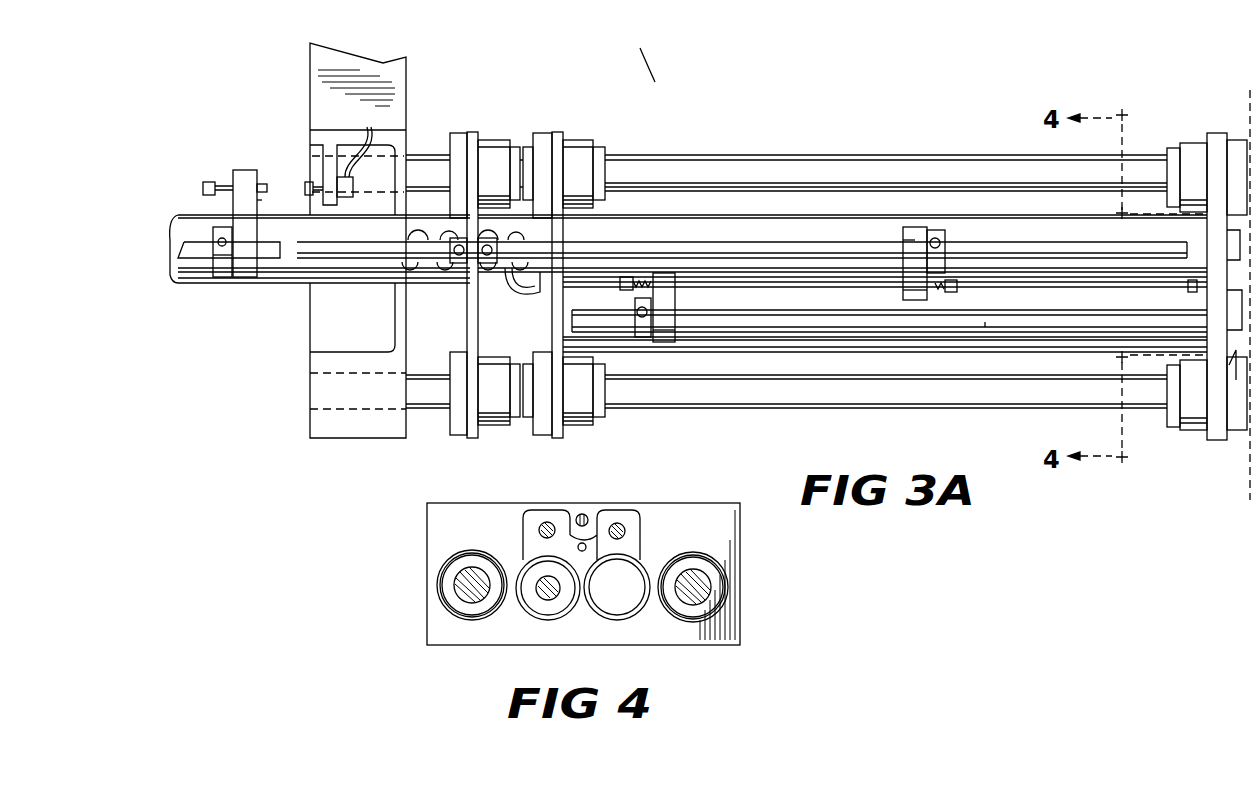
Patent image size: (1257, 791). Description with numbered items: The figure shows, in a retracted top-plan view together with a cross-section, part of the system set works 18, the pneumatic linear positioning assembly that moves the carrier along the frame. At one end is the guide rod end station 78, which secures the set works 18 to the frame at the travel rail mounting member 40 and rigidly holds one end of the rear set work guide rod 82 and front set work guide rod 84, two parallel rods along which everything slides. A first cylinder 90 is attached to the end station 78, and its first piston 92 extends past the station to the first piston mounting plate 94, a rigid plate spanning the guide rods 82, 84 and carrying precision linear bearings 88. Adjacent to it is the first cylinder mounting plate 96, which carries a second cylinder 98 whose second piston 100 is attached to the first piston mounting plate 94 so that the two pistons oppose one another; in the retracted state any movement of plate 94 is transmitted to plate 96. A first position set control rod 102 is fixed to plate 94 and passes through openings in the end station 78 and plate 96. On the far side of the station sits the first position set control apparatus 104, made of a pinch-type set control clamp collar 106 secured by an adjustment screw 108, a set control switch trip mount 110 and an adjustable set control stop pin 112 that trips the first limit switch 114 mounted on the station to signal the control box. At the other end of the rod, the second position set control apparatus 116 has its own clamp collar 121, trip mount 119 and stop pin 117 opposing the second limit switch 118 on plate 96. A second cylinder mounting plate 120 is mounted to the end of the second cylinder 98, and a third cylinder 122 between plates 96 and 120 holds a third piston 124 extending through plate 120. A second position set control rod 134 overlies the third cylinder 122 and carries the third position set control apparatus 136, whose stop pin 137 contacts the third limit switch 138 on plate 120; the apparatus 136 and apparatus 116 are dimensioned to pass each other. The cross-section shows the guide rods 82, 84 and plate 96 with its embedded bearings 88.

In FIG. 3A, the system set works 18 is at (636, 56).
In FIG. 3A, the travel rail mounting member 40 is at (322, 80).
In FIG. 3A, the guide rod end station 78 is at (350, 440).
In FIG. 3A, the rear set work guide rod 82 is at (800, 162).
In FIG. 4, the rear set work guide rod 82 is at (706, 598).
In FIG. 3A, the front set work guide rod 84 is at (868, 394).
In FIG. 4, the front set work guide rod 84 is at (460, 580).
In FIG. 3A, the bearings 88 is at (492, 140).
In FIG. 4, the bearings 88 is at (452, 595).
In FIG. 3A, the first cylinder 90 is at (296, 240).
In FIG. 3A, the first piston 92 is at (430, 236).
In FIG. 3A, the first piston mounting plate 94 is at (472, 440).
In FIG. 3A, the first cylinder mounting plate 96 is at (557, 440).
In FIG. 4, the first cylinder mounting plate 96 is at (713, 533).
In FIG. 3A, the second cylinder 98 is at (781, 240).
In FIG. 4, the second cylinder 98 is at (627, 622).
In FIG. 3A, the second piston 100 is at (524, 240).
In FIG. 3A, the first position set control rod 102 is at (191, 242).
In FIG. 4, the first position set control rod 102 is at (617, 523).
In FIG. 3A, the first position set control apparatus 104 is at (262, 200).
In FIG. 3A, the set control clamp collar 106 is at (215, 280).
In FIG. 3A, the set control clamp collar adjustment screw 108 is at (226, 280).
In FIG. 3A, the set control switch trip mount 110 is at (248, 170).
In FIG. 3A, the set control stop pin 112 is at (210, 180).
In FIG. 3A, the first limit switch 114 is at (344, 177).
In FIG. 3A, the second position set control apparatus 116 is at (915, 236).
In FIG. 4, the second position set control apparatus 116 is at (642, 542).
In FIG. 3A, the set control stop pin 117 is at (950, 294).
In FIG. 4, the set control stop pin 117 is at (583, 514).
In FIG. 3A, the second limit switch 118 is at (535, 293).
In FIG. 3A, the set control switch trip mount 119 is at (903, 240).
In FIG. 3A, the second cylinder mounting plate 120 is at (1213, 440).
In FIG. 3A, the set control clamp collar 121 is at (947, 238).
In FIG. 3A, the third cylinder 122 is at (826, 310).
In FIG. 4, the third cylinder 122 is at (528, 614).
In FIG. 3A, the third piston 124 is at (1223, 366).
In FIG. 3A, the second position set control rod 134 is at (985, 323).
In FIG. 4, the second position set control rod 134 is at (547, 522).
In FIG. 3A, the third position set control apparatus 136 is at (677, 304).
In FIG. 4, the third position set control apparatus 136 is at (528, 525).
In FIG. 3A, the set control stop pin 137 is at (626, 278).
In FIG. 4, the set control stop pin 137 is at (577, 548).
In FIG. 3A, the third limit switch 138 is at (1186, 290).